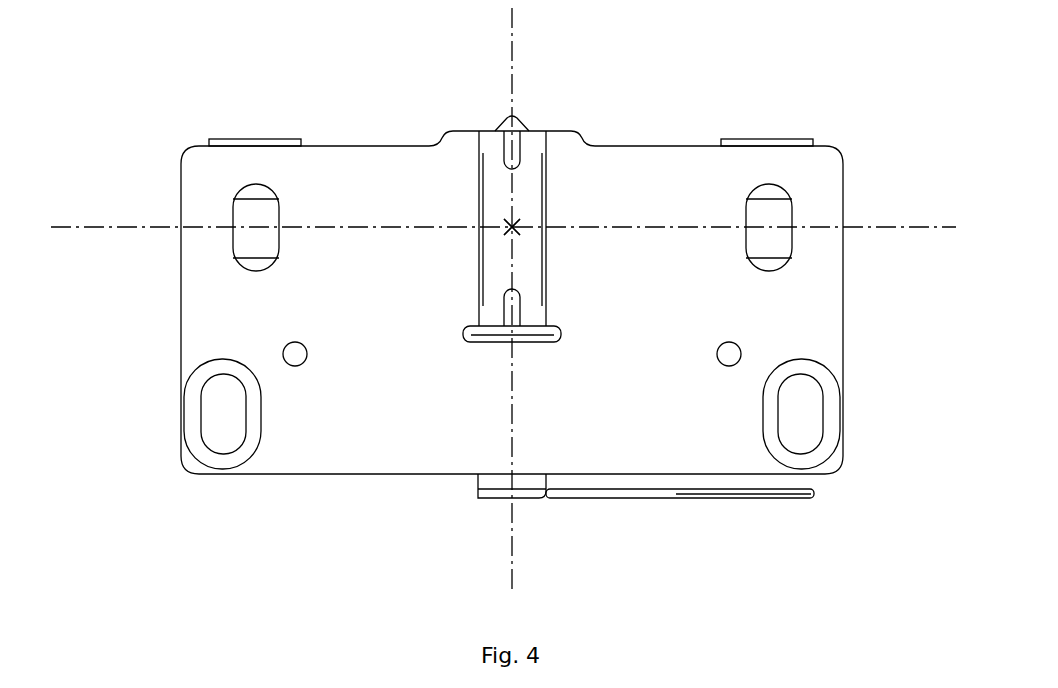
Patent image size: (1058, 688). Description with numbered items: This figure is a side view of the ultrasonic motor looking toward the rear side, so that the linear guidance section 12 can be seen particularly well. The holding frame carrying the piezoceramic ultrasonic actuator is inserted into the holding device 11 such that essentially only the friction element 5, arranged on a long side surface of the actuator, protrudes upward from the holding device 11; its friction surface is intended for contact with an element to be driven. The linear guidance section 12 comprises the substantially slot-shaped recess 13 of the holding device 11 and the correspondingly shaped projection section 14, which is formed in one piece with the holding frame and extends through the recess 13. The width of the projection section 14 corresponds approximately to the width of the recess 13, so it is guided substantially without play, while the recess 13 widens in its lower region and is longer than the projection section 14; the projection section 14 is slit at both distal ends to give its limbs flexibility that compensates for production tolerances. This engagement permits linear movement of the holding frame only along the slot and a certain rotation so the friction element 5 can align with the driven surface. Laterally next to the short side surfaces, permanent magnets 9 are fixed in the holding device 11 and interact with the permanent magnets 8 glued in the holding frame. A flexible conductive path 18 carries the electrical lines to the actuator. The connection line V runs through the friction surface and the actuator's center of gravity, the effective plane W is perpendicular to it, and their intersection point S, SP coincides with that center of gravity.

The friction element 5 is at (511, 112).
The permanent magnets 8 is at (250, 218).
The permanent magnets 9 is at (255, 138).
The holding device 11 is at (388, 415).
The linear guidance section 12 is at (556, 89).
The slot-shaped recess 13 is at (473, 116).
The projection section 14 is at (528, 200).
The flexible conductive path 18 is at (750, 493).
The center point S is at (478, 228).
The intersection point SP is at (512, 227).
The connection line V is at (511, 522).
The effective plane W is at (875, 228).